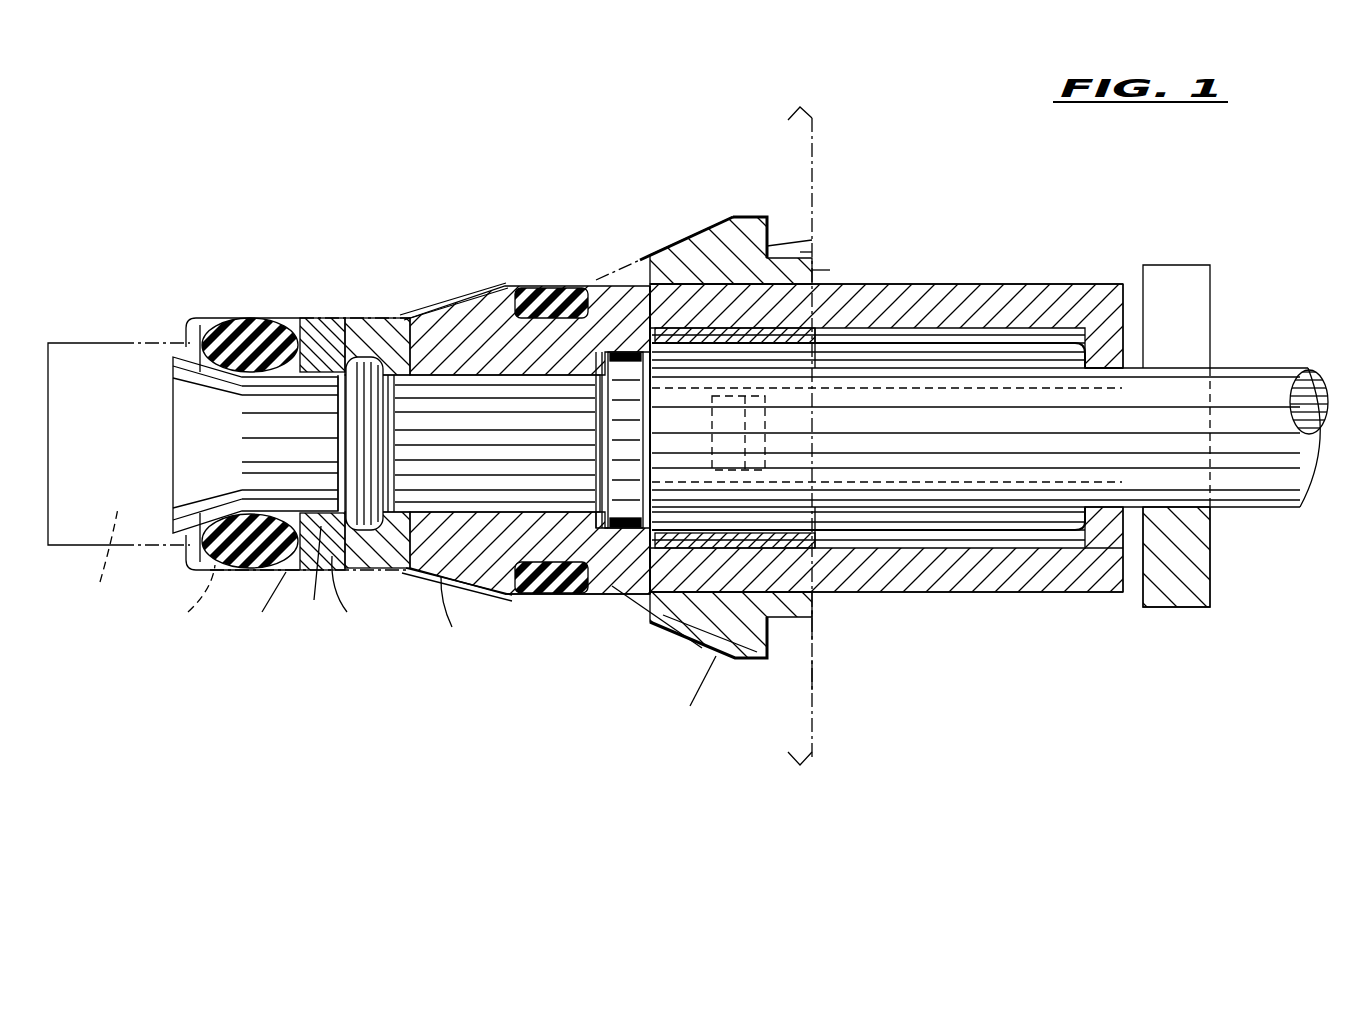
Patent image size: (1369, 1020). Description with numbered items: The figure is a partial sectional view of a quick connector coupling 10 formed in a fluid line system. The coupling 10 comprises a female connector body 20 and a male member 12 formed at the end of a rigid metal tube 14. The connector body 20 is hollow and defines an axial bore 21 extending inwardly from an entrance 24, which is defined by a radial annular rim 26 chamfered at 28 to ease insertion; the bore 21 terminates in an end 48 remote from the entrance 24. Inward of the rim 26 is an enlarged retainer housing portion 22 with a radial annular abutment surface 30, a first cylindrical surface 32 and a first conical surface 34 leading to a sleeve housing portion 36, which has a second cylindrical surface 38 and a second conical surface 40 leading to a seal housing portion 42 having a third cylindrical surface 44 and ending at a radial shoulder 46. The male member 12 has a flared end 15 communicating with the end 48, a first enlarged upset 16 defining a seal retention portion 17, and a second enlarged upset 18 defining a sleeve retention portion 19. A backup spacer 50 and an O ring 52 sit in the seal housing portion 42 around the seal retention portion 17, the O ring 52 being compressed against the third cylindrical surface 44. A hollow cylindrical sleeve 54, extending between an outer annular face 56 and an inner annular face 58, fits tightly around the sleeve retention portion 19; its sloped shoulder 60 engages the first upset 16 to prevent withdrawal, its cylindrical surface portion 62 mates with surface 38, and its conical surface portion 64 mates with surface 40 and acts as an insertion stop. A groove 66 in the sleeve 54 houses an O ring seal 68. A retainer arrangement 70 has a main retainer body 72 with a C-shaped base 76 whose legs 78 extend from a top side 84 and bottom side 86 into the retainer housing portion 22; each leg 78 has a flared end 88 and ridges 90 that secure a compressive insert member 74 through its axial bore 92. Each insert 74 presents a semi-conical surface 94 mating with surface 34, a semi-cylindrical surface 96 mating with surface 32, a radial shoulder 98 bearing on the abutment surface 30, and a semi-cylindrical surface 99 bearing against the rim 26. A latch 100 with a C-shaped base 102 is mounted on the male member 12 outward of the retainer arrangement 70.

The quick connector coupling 10 is at (295, 128).
The male member 12 is at (1003, 360).
The tube 14 is at (1318, 396).
The flared end 15 is at (186, 395).
The first enlarged upset 16 is at (361, 370).
The seal retention portion 17 is at (313, 505).
The second enlarged upset 18 is at (622, 352).
The sleeve retention portion 19 is at (596, 356).
The female connector body 20 is at (813, 168).
The axial bore 21 is at (88, 560).
The retainer housing portion 22 is at (674, 252).
The entrance 24 is at (816, 624).
The radial annular rim 26 is at (814, 672).
The chamfer 28 is at (826, 270).
The annular abutment surface 30 is at (770, 253).
The first cylindrical surface 32 is at (736, 650).
The first conical surface 34 is at (702, 632).
The sleeve housing portion 36 is at (480, 286).
The second cylindrical surface 38 is at (580, 592).
The second conical surface 40 is at (440, 583).
The seal housing portion 42 is at (284, 318).
The third cylindrical surface 44 is at (254, 603).
The radial shoulder 46 is at (181, 599).
The end of bore 48 is at (108, 340).
The backup spacer 50 is at (316, 338).
The O ring 52 is at (233, 335).
The sleeve 54 is at (456, 330).
The outer annular face 56 is at (624, 600).
The inner annular face 58 is at (371, 482).
The sloped shoulder 60 is at (352, 512).
The cylindrical surface portion 62 is at (606, 600).
The conical surface portion 64 is at (447, 616).
The groove 66 is at (529, 598).
The O ring seal 68 is at (526, 300).
The retainer arrangement 70 is at (1072, 598).
The main retainer body 72 is at (776, 320).
The compressive insert member 74 is at (689, 699).
The base 76 is at (1130, 345).
The legs 78 is at (1062, 310).
The top side 84 is at (1105, 285).
The bottom side 86 is at (1097, 598).
The flared end 88 is at (650, 360).
The ridges 90 is at (822, 340).
The axial bore 92 is at (718, 330).
The semi-conical surface 94 is at (735, 230).
The semi-cylindrical surface 96 is at (762, 226).
The radial shoulder 98 is at (778, 636).
The semi-cylindrical surface 99 is at (812, 255).
The latch 100 is at (1210, 594).
The base 102 is at (1185, 590).